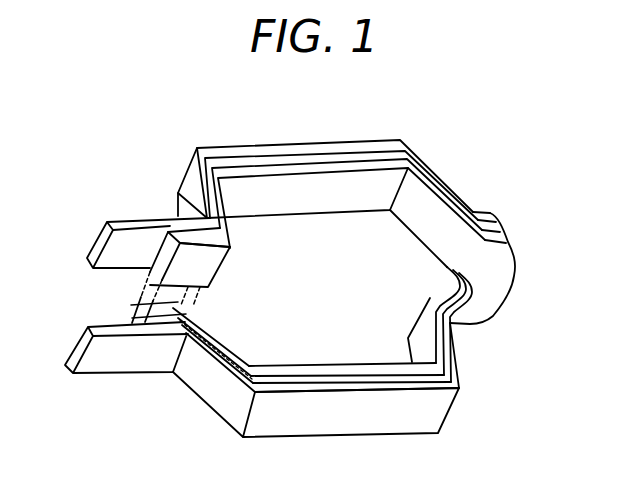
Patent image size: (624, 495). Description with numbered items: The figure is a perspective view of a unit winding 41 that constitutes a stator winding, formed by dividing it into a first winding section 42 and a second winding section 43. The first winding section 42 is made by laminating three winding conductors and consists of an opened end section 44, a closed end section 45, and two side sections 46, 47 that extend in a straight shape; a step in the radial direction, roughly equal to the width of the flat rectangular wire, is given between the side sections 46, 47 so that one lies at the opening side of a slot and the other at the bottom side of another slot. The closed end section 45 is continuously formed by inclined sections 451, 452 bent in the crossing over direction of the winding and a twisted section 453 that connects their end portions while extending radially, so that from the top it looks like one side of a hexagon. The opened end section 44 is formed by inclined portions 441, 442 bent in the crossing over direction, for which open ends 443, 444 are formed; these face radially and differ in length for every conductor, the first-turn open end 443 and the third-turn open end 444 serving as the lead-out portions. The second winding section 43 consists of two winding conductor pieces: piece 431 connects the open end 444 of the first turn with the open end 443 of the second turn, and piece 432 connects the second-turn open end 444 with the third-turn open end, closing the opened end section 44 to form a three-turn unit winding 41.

The unit winding 41 is at (543, 113).
The first winding section 42 is at (358, 138).
The side section 47 is at (324, 184).
The inclined portion 442 is at (189, 192).
The winding conductor piece 432 is at (150, 284).
The second winding section 43 is at (152, 293).
The opened end section 44 is at (192, 273).
The open end 444 is at (200, 256).
The winding conductor piece 431 is at (193, 312).
The open end 443 is at (137, 327).
The inclined portion 441 is at (211, 383).
The side section 46 is at (355, 417).
The inclined section 452 is at (458, 193).
The closed end section 45 is at (508, 244).
The twisted section 453 is at (492, 277).
The inclined section 451 is at (457, 363).